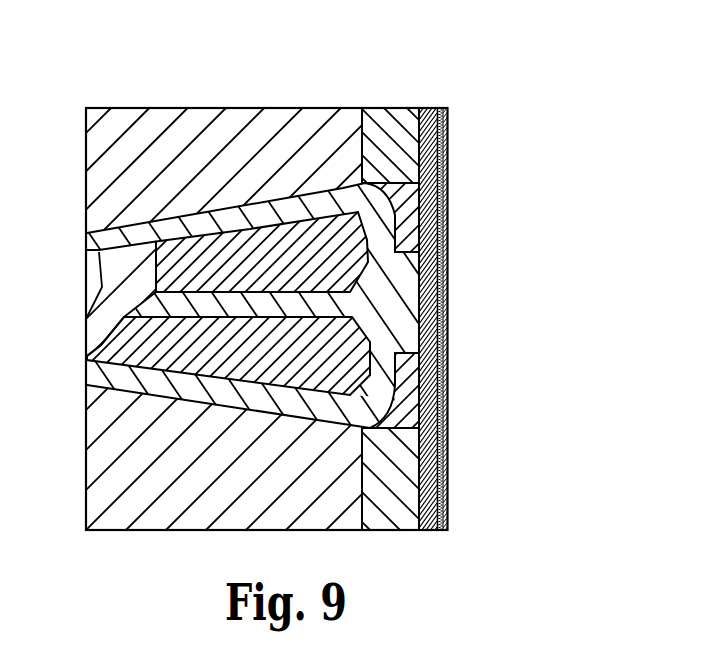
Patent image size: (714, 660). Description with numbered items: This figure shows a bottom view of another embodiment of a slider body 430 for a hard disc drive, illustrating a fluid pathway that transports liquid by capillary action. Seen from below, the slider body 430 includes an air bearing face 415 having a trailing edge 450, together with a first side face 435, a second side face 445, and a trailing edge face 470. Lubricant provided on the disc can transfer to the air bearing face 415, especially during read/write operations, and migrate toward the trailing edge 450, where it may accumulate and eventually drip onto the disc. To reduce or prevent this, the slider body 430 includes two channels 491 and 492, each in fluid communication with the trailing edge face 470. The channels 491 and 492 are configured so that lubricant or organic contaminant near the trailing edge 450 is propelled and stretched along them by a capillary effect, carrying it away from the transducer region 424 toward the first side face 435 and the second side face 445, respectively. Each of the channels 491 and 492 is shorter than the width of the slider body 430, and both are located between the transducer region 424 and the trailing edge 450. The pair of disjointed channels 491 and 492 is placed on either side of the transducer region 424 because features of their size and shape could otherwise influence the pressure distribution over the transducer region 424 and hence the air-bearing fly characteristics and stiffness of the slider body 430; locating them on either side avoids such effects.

The air bearing face 415 is at (210, 174).
The transducer region 424 is at (160, 333).
The slider body 430 is at (540, 165).
The first side face 435 is at (330, 107).
The second side face 445 is at (395, 532).
The trailing edge 450 is at (449, 155).
The trailing edge face 470 is at (486, 201).
The channel 491 is at (457, 226).
The channel 492 is at (458, 414).